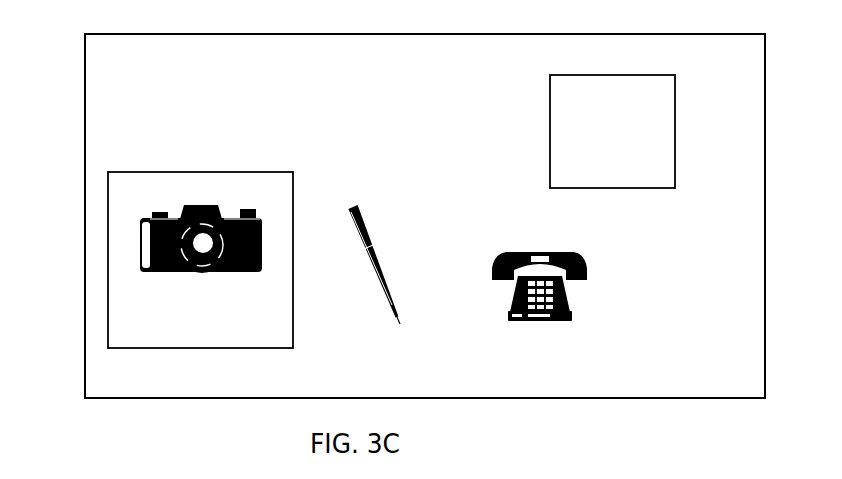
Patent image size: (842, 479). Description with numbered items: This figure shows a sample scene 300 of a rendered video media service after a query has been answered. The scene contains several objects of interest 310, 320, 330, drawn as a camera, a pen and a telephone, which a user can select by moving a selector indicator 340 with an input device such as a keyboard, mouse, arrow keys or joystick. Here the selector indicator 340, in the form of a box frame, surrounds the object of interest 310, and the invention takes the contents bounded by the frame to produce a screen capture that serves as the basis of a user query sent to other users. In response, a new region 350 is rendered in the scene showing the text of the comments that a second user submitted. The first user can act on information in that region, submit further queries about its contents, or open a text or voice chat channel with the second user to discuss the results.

The sample scene 300 is at (56, 96).
The object of interest 310 is at (201, 306).
The object of interest 320 is at (409, 348).
The object of interest 330 is at (544, 360).
The selector indicator 340 is at (201, 155).
The region 350 is at (562, 58).